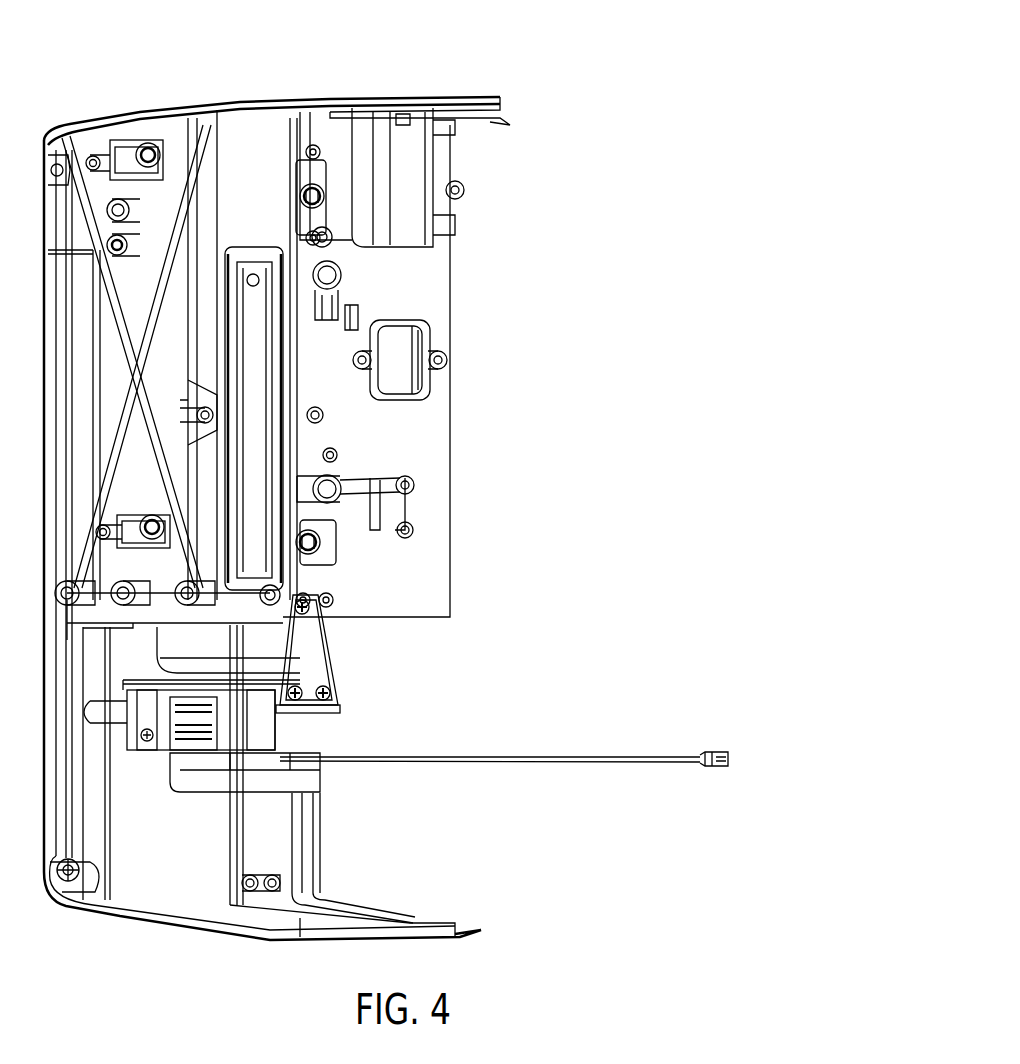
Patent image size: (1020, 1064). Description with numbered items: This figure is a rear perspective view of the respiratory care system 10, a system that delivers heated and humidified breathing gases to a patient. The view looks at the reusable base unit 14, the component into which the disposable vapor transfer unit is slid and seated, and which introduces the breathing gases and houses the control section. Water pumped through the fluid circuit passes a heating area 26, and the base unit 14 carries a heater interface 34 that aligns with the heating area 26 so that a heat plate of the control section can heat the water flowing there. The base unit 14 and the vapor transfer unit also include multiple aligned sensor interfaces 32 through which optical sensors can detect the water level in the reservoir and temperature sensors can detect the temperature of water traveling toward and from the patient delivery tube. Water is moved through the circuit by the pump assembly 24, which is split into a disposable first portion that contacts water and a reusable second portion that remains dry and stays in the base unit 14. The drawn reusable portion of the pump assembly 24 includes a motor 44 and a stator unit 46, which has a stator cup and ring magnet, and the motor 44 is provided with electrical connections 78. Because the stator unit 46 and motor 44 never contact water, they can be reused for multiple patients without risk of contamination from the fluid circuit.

The respiratory care system 10 is at (552, 43).
The base unit 14 is at (391, 138).
The pump assembly 24 is at (324, 661).
The heating area 26 is at (250, 456).
The sensor interfaces 32 is at (162, 157).
The heater interface 34 is at (235, 487).
The motor 44 is at (286, 735).
The stator unit 46 is at (262, 652).
The electrical connections 78 is at (478, 757).